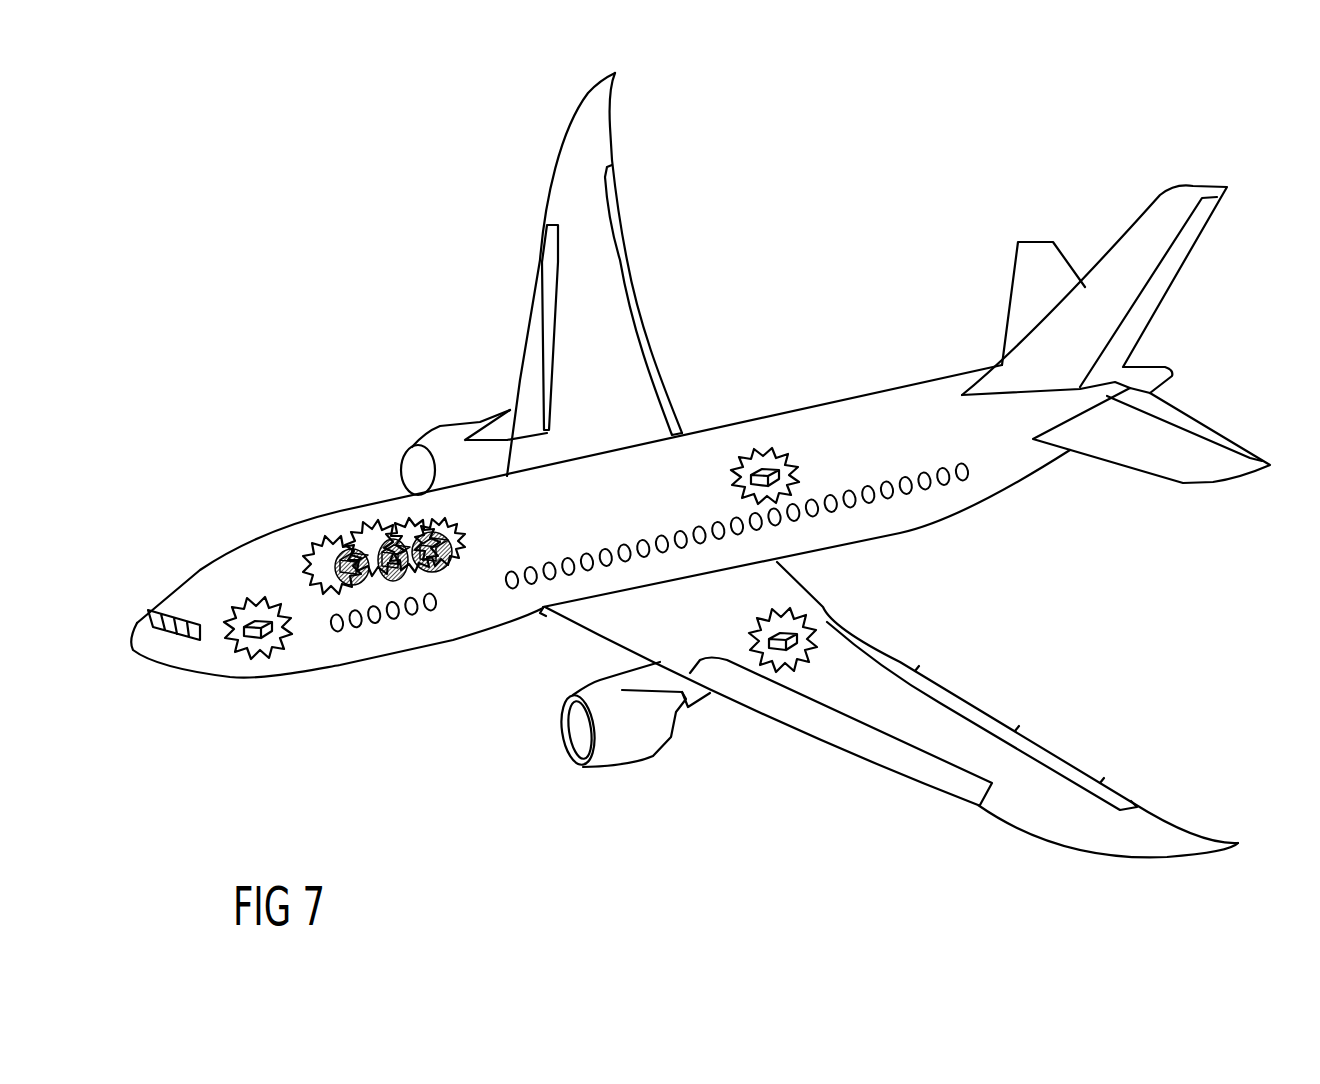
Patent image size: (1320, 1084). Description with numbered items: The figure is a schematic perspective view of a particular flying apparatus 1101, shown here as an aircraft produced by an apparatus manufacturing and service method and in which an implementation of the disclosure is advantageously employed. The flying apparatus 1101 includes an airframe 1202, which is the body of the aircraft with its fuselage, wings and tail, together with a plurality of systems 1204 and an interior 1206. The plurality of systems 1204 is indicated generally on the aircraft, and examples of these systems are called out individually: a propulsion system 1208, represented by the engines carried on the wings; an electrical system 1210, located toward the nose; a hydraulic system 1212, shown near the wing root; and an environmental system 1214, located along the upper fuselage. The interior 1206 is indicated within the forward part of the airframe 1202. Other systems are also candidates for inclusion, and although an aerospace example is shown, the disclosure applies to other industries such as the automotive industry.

The flying apparatus 1101 is at (299, 176).
The airframe 1202 is at (469, 722).
The plurality of systems 1204 is at (871, 330).
The interior 1206 is at (339, 548).
The propulsion system 1208 is at (441, 442).
The electrical system 1210 is at (259, 593).
The hydraulic system 1212 is at (791, 627).
The environmental system 1214 is at (765, 447).